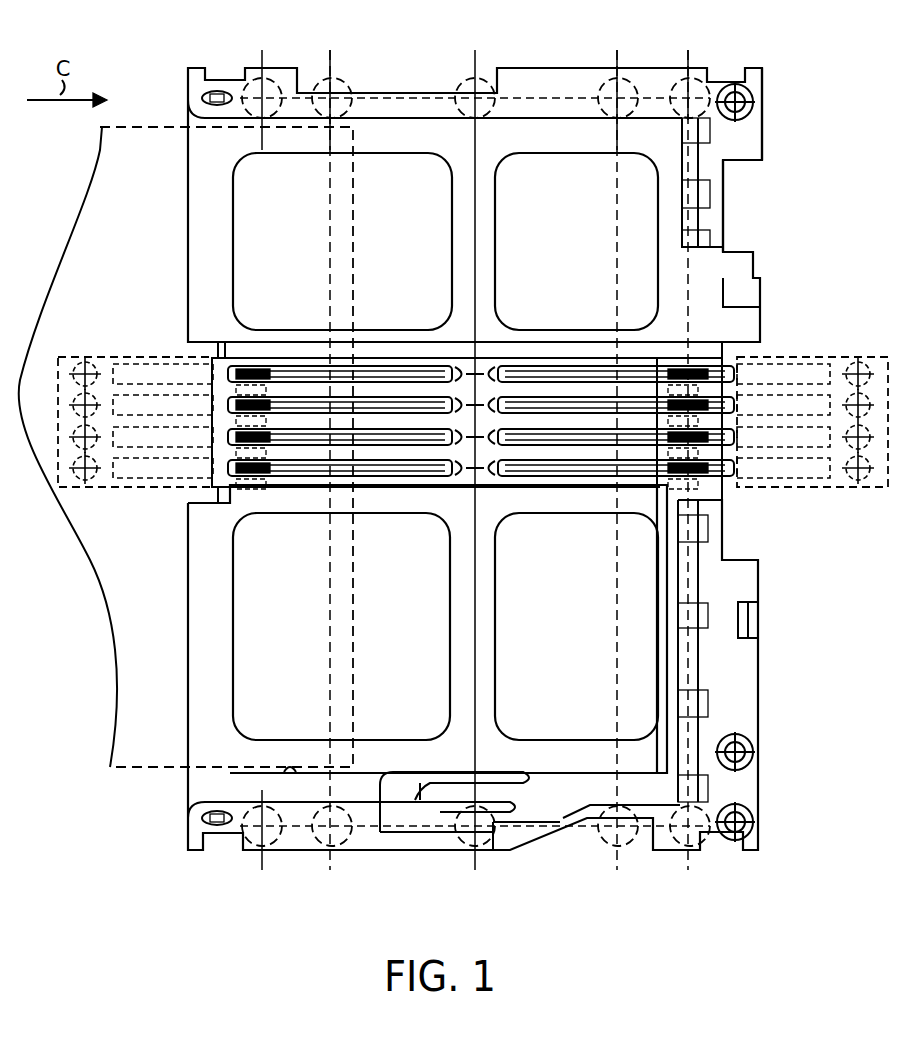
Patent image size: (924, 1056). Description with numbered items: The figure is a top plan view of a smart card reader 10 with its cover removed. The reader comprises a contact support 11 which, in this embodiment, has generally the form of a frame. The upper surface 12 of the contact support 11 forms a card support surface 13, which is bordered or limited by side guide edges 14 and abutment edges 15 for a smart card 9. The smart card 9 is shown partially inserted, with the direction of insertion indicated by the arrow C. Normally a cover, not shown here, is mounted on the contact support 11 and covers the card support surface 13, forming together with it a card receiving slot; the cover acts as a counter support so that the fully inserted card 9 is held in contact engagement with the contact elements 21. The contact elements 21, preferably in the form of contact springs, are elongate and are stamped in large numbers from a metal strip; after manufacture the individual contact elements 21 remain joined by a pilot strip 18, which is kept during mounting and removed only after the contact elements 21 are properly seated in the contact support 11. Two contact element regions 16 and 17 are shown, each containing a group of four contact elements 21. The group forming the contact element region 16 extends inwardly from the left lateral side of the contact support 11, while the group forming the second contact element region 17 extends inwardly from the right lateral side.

The smart card 9 is at (134, 122).
The smart card reader 10 is at (724, 70).
The contact support 11 is at (764, 129).
The upper surface 12 is at (753, 147).
The card support surface 13 is at (390, 135).
The side guide edges 14 is at (523, 120).
The abutment edges 15 is at (680, 232).
The contact element region 16 is at (206, 320).
The second contact element region 17 is at (574, 487).
The pilot strip 18 is at (822, 358).
The contact elements 21 is at (302, 357).